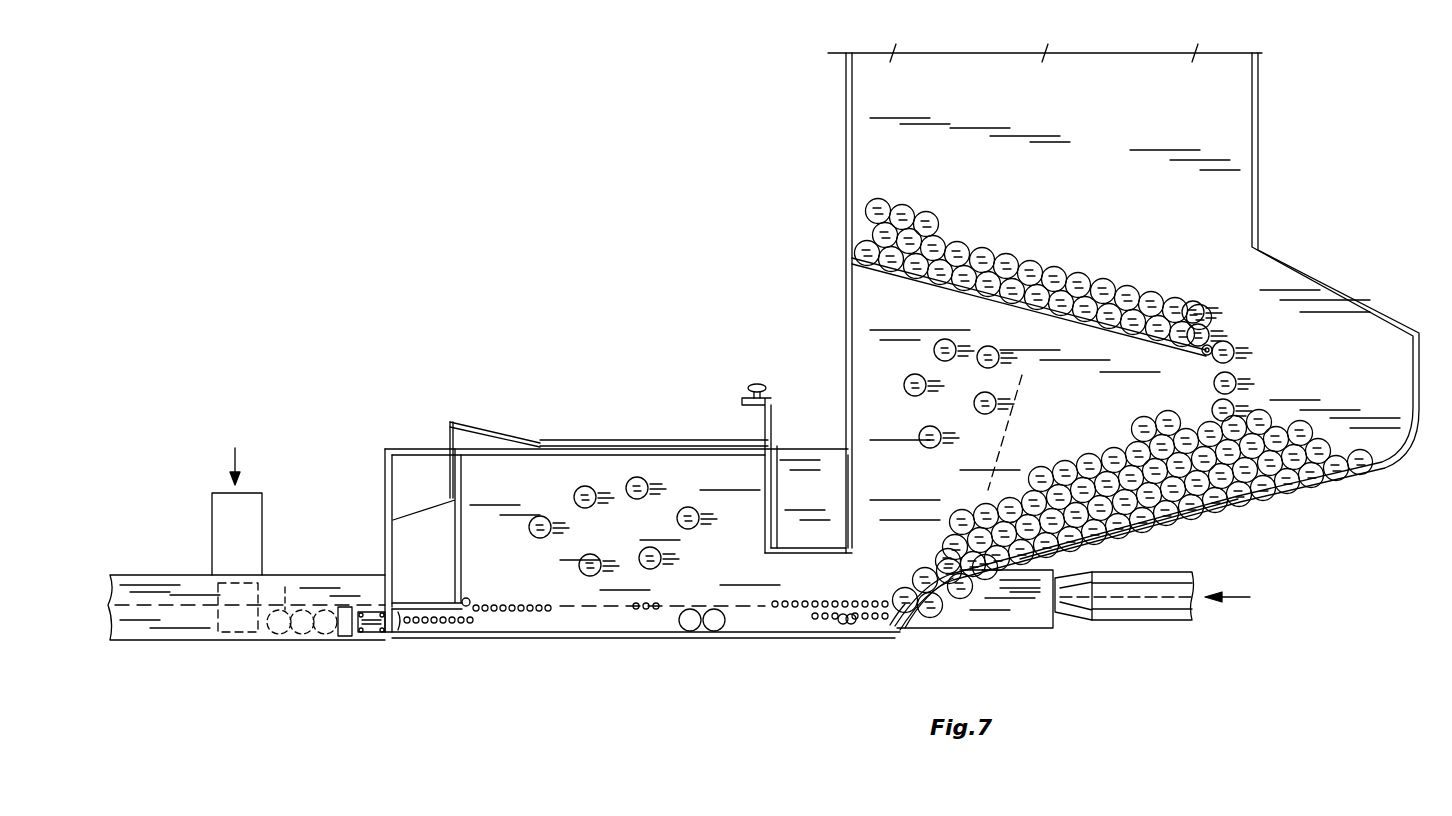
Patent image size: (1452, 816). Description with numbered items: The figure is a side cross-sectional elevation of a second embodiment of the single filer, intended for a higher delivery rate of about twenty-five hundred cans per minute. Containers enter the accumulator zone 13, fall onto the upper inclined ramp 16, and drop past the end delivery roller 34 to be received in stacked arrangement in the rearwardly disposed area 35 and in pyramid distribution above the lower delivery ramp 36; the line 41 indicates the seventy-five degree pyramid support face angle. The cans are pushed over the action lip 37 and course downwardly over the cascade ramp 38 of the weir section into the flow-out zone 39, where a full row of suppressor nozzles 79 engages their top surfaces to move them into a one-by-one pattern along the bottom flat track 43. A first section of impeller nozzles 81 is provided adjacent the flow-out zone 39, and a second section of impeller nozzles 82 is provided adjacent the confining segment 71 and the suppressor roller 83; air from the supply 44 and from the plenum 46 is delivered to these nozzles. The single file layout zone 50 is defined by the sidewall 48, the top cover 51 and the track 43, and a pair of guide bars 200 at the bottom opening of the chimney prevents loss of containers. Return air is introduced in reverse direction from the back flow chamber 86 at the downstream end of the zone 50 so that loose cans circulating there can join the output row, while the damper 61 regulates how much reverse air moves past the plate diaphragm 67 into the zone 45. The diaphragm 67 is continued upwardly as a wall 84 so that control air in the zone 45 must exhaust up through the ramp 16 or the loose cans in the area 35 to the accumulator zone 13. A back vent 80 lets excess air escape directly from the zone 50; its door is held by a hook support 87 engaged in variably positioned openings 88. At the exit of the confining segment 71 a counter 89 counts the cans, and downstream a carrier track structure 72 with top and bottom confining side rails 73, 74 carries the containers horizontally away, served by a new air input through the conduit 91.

The accumulator zone 13 is at (1120, 146).
The upper inclined ramp 16 is at (1078, 322).
The end delivery roller 34 is at (1191, 362).
The rearwardly disposed area 35 is at (1320, 394).
The lower delivery ramp 36 is at (1252, 510).
The action lip 37 is at (950, 590).
The cascade ramp 38 is at (948, 612).
The flow-out zone 39 is at (893, 642).
The line 41 is at (1024, 392).
The bottom flat track 43 is at (640, 640).
The air supply 44 is at (1150, 610).
The zone 45 is at (958, 422).
The plenum 46 is at (1030, 626).
The sidewall 48 is at (1370, 328).
The single file layout zone 50 is at (640, 542).
The top cover 51 is at (611, 440).
The damper 61 is at (765, 412).
The plate diaphragm 67 is at (858, 500).
The confining segment 71 is at (422, 630).
The carrier track structure 72 is at (172, 612).
The top container confining side rail 73 is at (284, 580).
The bottom container confining side rail 74 is at (212, 642).
The suppressor nozzles 79 is at (798, 603).
The back vent 80 is at (493, 432).
The impeller nozzles 81 is at (824, 640).
The impeller nozzles 82 is at (443, 640).
The suppressor roller 83 is at (470, 598).
The wall 84 is at (846, 318).
The back flow chamber 86 is at (400, 565).
The hook support 87 is at (452, 432).
The openings 88 is at (462, 508).
The counter 89 is at (348, 638).
The conduit 91 is at (255, 505).
The guide bars 200 is at (806, 560).